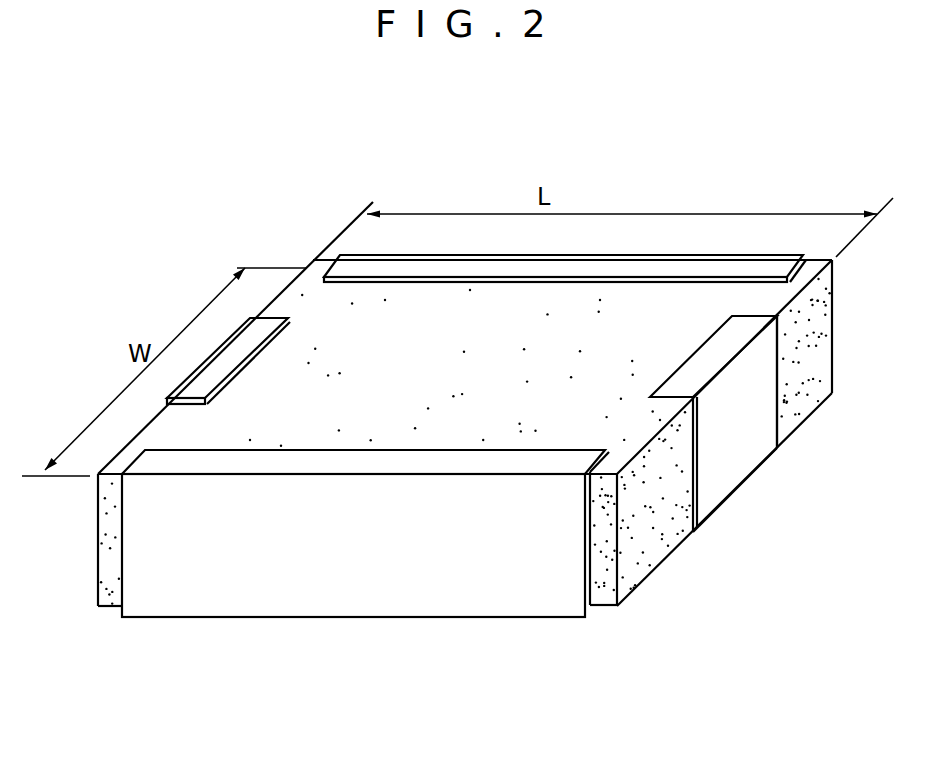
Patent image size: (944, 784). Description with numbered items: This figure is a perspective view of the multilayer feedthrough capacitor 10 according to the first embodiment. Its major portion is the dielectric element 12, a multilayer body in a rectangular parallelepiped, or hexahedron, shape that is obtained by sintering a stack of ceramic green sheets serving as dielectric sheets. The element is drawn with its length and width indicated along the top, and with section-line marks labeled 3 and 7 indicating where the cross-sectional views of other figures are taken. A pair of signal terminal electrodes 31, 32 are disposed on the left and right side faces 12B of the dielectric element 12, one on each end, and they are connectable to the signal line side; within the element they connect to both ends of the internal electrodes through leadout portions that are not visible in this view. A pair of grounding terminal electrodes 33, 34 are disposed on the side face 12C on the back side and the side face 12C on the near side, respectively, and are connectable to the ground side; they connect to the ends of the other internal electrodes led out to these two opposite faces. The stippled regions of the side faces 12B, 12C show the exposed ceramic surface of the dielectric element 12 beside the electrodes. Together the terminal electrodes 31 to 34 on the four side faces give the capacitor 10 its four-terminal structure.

The multilayer feedthrough capacitor 10 is at (699, 199).
The dielectric element 12 is at (323, 298).
The side face 12B is at (96, 578).
The side face 12C is at (598, 580).
The signal terminal electrode 31 is at (235, 354).
The signal terminal electrode 32 is at (722, 488).
The grounding terminal electrode 33 is at (537, 263).
The grounding terminal electrode 34 is at (293, 595).
The section line 3- 3 is at (190, 367).
The section line 7- 7 is at (660, 428).